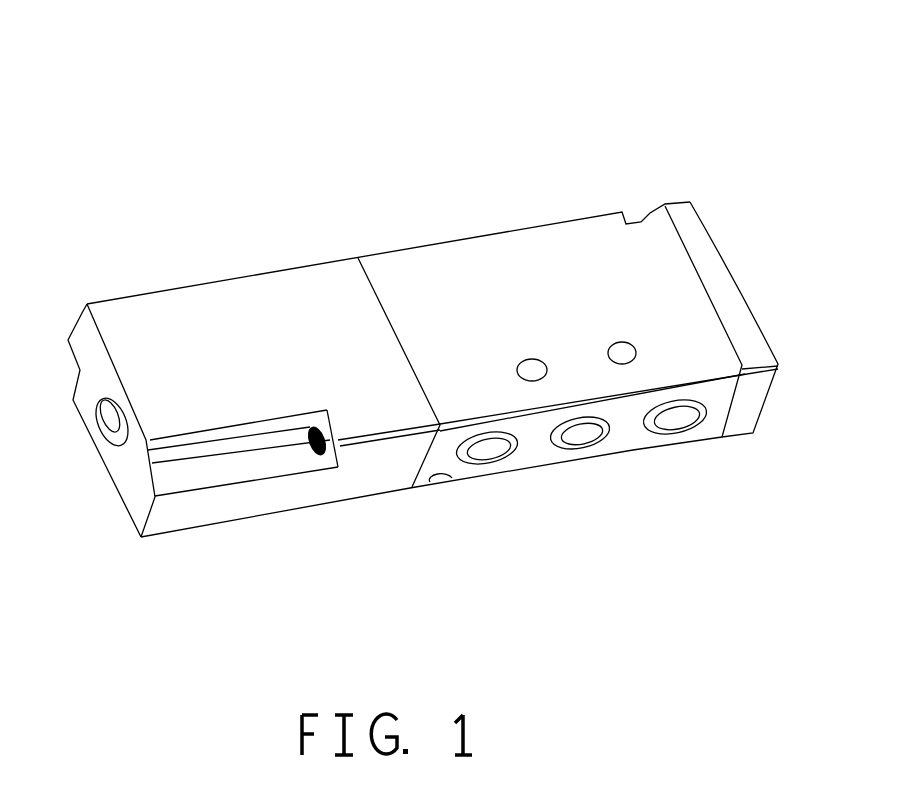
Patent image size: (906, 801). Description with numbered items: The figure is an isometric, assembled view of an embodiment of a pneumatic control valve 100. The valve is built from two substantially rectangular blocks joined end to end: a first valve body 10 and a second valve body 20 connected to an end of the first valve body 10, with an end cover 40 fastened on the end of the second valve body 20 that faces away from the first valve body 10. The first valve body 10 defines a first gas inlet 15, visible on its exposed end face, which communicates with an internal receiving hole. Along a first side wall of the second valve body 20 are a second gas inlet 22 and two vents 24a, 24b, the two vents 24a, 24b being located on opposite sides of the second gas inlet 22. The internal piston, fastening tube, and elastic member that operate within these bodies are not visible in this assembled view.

The pneumatic control valve 100 is at (218, 100).
The first valve body 10 is at (263, 320).
The first gas inlet 15 is at (100, 435).
The second valve body 20 is at (523, 257).
The second gas inlet 22 is at (587, 442).
The vent 24a is at (488, 460).
The vent 24b is at (673, 433).
The end cover 40 is at (700, 227).